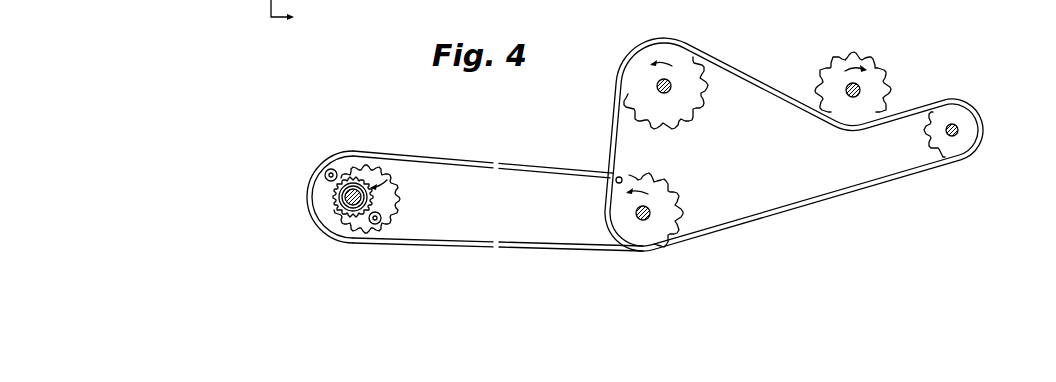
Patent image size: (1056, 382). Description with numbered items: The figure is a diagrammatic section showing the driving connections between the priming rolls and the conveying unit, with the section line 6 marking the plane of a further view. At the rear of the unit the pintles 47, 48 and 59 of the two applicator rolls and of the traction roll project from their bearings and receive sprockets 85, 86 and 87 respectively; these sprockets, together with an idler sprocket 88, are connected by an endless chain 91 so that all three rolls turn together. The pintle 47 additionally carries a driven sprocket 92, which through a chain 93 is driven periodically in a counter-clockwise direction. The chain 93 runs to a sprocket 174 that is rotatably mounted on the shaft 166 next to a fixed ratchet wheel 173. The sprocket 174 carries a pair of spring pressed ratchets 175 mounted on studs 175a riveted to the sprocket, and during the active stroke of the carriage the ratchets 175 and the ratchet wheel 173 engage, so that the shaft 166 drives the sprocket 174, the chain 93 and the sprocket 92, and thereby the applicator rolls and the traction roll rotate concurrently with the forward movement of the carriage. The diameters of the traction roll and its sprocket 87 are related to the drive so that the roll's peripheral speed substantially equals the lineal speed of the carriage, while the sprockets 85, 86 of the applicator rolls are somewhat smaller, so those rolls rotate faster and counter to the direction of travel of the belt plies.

The section line 6- 6 is at (283, 20).
The pintle 47 is at (649, 215).
The pintle 48 is at (861, 90).
The pintle 59 is at (673, 91).
The sprocket 85 is at (655, 201).
The sprocket 86 is at (868, 56).
The sprocket 87 is at (671, 53).
The idler sprocket 88 is at (956, 126).
The endless chain 91 is at (757, 80).
The driven sprocket 92 is at (620, 177).
The chain 93 is at (562, 167).
The shaft 166 is at (398, 197).
The ratchet wheel 173 is at (333, 197).
The sprocket 174 is at (330, 208).
The spring pressed ratchets 175 is at (334, 170).
The studs 175a is at (324, 171).